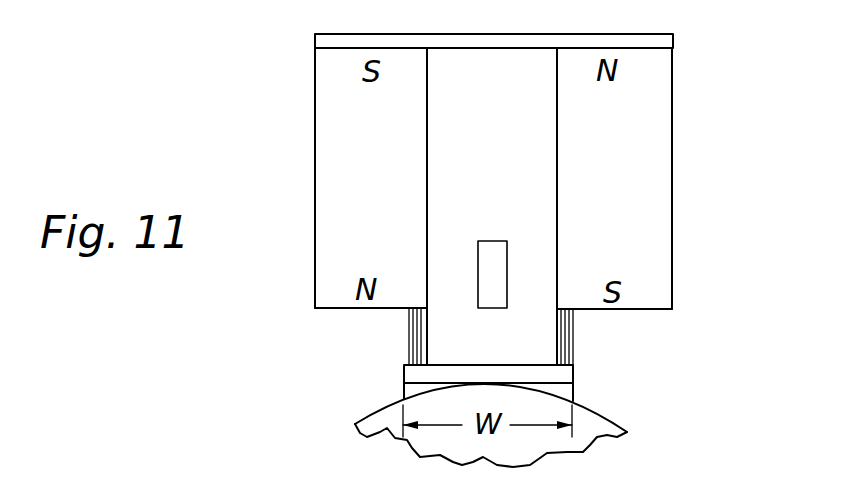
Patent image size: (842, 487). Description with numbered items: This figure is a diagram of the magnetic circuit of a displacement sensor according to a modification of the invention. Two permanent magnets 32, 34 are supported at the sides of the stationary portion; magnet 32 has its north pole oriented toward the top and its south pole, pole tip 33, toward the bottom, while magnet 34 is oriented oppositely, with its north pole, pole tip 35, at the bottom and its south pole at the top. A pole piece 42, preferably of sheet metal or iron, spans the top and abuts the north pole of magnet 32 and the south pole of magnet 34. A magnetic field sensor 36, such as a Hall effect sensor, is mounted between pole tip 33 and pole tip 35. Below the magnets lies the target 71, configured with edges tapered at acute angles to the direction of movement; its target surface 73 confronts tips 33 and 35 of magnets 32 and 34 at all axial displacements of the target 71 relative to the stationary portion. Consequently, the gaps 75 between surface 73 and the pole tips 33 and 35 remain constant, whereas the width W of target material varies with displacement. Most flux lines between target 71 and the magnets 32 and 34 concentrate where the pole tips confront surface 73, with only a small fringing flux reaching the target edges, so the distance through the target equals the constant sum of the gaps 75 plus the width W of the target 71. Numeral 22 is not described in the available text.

The pole piece 42 is at (653, 34).
The permanent magnet 34 is at (314, 162).
The permanent magnet 32 is at (672, 174).
The pole tip 35 is at (316, 309).
The pole tip 33 is at (655, 310).
The magnetic field sensor 36 is at (490, 241).
The gaps 75 is at (332, 356).
The target surface 73 is at (481, 364).
The target 71 is at (404, 386).
The recording medium 22 is at (603, 410).